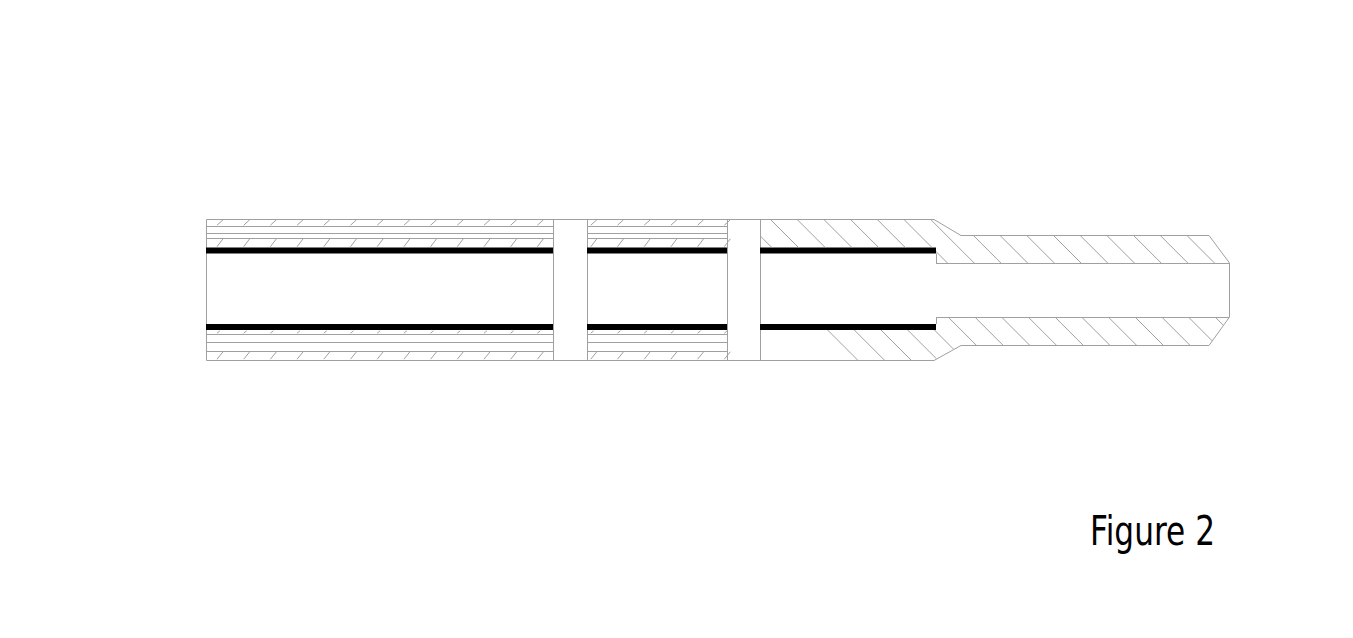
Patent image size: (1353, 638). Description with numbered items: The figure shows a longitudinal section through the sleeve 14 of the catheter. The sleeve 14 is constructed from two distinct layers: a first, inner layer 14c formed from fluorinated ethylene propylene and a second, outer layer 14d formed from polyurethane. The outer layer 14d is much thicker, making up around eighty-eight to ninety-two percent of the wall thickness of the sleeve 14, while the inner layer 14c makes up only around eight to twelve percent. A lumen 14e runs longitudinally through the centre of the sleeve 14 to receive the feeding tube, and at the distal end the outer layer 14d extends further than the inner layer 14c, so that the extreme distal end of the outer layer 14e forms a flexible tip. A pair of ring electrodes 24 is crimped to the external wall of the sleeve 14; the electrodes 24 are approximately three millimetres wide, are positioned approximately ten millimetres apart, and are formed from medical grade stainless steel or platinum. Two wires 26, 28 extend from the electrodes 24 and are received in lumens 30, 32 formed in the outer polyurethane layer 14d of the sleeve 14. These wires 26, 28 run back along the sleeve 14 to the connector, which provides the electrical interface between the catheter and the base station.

The sleeve 14 is at (410, 207).
The ring electrodes 24 is at (572, 240).
The wire 26 is at (207, 232).
The wire 28 is at (207, 350).
The lumen 30 is at (207, 237).
The lumen 32 is at (207, 340).
The inner layer 14c is at (827, 332).
The outer layer 14d is at (828, 228).
The lumen 14e is at (1229, 281).